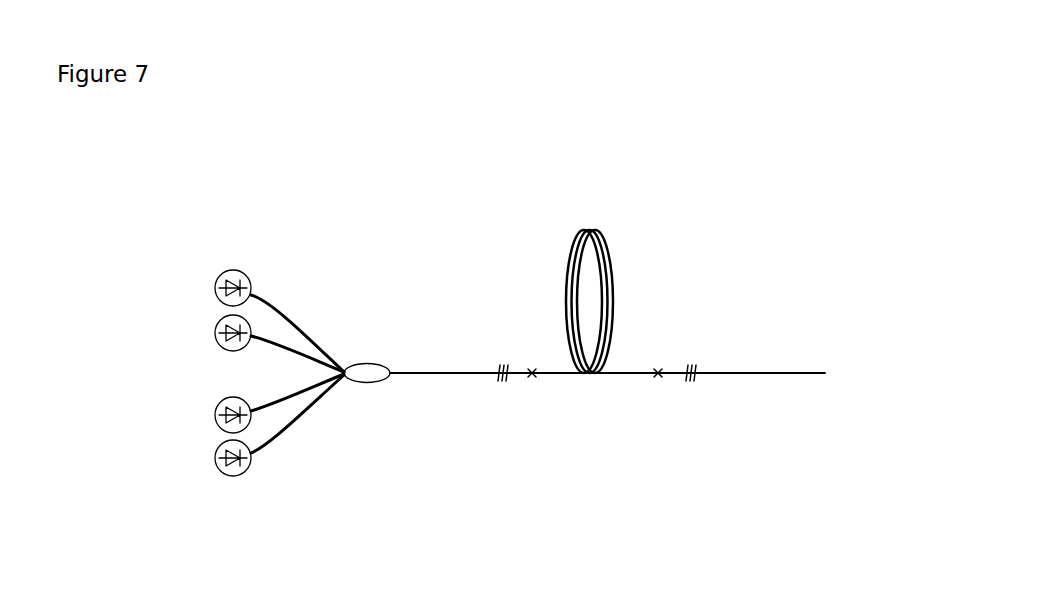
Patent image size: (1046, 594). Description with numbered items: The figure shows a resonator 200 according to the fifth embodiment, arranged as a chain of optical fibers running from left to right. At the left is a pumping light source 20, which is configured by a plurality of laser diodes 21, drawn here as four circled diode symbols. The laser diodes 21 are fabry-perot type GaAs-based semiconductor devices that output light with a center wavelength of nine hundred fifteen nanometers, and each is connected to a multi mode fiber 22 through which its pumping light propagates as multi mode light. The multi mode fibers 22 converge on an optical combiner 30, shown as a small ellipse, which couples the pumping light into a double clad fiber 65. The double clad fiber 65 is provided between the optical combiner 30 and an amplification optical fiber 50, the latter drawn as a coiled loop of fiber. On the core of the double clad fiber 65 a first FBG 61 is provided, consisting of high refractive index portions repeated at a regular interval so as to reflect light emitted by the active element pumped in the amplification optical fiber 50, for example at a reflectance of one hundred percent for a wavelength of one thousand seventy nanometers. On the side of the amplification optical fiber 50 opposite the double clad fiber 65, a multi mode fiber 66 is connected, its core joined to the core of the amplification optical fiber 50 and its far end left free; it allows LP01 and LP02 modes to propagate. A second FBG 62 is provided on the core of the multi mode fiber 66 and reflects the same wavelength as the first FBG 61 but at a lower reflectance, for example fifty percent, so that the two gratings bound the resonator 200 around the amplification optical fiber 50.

The resonator 200 is at (728, 203).
The pumping light source 20 is at (146, 328).
The laser diode 21 is at (216, 292).
The multi mode fiber 22 is at (260, 297).
The optical combiner 30 is at (373, 375).
The amplification optical fiber 50 is at (612, 372).
The first FBG 61 is at (507, 378).
The second FBG 62 is at (692, 378).
The double clad fiber 65 is at (422, 372).
The multi mode fiber 66 is at (725, 372).